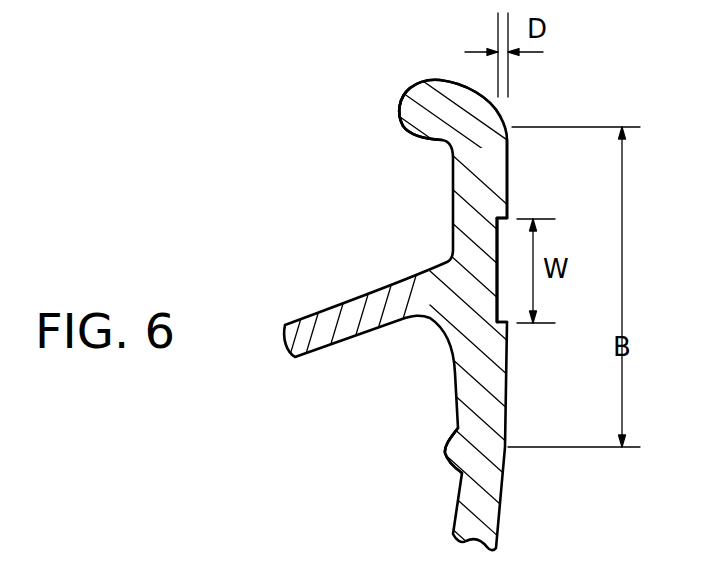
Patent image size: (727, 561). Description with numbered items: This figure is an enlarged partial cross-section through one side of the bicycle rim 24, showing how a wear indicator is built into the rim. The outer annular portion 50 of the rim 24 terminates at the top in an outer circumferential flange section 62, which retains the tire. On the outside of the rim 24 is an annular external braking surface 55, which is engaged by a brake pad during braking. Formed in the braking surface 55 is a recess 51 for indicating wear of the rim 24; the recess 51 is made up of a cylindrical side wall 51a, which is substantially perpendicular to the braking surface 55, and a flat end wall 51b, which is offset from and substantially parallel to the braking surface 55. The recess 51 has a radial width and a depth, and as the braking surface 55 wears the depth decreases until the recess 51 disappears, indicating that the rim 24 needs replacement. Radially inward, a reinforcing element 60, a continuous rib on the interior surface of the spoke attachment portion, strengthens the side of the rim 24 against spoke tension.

The rim 24 is at (388, 68).
The outer circumferential flange section 62 is at (425, 102).
The outer annular portion 50 is at (388, 118).
The braking surface 55 is at (507, 163).
The cylindrical side wall 51a is at (505, 220).
The flat end wall 51b is at (495, 265).
The recess 51 is at (506, 311).
The reinforcing element 60 is at (444, 451).